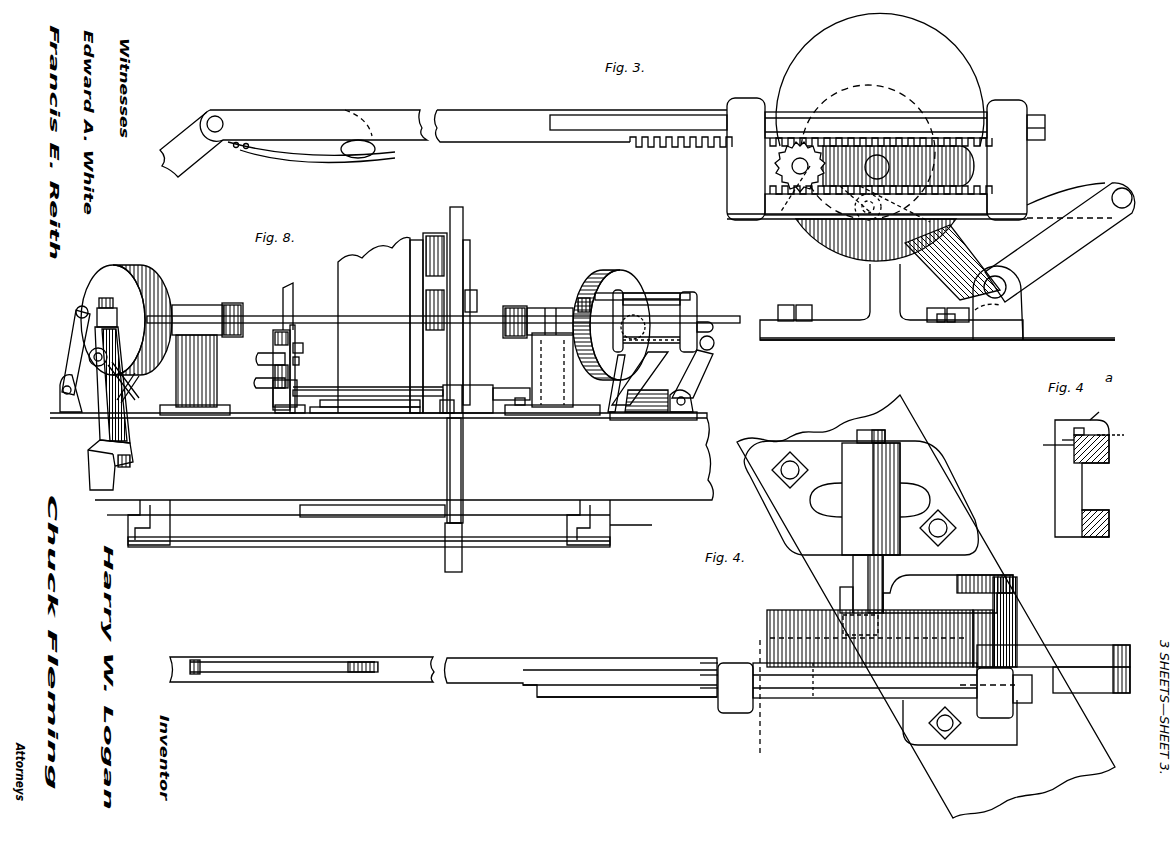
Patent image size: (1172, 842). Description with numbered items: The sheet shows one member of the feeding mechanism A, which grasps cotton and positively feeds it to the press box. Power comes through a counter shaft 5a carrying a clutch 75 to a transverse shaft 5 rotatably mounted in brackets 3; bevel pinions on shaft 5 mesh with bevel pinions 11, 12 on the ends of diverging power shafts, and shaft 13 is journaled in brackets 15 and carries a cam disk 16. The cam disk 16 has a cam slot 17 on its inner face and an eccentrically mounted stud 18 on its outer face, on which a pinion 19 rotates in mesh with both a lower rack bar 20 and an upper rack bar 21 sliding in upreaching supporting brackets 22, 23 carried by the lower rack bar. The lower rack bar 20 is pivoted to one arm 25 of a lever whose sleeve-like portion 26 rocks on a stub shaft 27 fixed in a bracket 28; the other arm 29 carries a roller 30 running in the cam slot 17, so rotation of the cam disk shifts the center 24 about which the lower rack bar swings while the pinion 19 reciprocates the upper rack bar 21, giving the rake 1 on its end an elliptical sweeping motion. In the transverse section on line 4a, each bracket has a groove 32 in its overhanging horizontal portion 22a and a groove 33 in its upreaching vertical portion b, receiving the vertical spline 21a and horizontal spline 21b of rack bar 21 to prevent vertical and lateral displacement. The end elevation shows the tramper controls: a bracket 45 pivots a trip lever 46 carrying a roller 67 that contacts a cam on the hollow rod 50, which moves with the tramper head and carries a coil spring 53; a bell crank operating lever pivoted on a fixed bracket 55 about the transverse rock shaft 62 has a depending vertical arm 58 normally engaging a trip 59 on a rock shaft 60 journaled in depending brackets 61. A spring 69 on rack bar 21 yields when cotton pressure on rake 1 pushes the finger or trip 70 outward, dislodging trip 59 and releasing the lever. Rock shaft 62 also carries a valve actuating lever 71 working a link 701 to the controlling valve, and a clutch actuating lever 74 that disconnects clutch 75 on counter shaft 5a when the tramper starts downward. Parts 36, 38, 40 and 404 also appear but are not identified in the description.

In FIG. 3, the rake 1 is at (162, 150).
In FIG. 4, the rake 1 is at (442, 668).
In FIG. 8, the brackets 3 is at (62, 427).
In FIG. 8, the transverse shaft 5 is at (320, 318).
In FIG. 8, the counter shaft 5a is at (712, 322).
In FIG. 8, the bevel pinion 11 is at (514, 306).
In FIG. 8, the bevel pinion 12 is at (236, 304).
In FIG. 3, the shaft 13 is at (866, 168).
In FIG. 4, the shaft 13 is at (855, 567).
In FIG. 3, the brackets 15 is at (872, 289).
In FIG. 8, the brackets 15 is at (210, 335).
In FIG. 4, the brackets 15 is at (858, 468).
In FIG. 3, the cam disk 16 is at (918, 90).
In FIG. 8, the cam disk 16 is at (125, 272).
In FIG. 4, the cam disk 16 is at (768, 628).
In FIG. 3, the cam slot 17 is at (842, 96).
In FIG. 4, the cam slot 17 is at (793, 620).
In FIG. 3, the stud 18 is at (800, 175).
In FIG. 3, the pinion 19 is at (785, 170).
In FIG. 8, the pinion 19 is at (89, 358).
In FIG. 4, the pinion 19 is at (808, 690).
In FIG. 3, the lower rack bar 20 is at (812, 212).
In FIG. 8, the lower rack bar 20 is at (100, 430).
In FIG. 4A, the lower rack bar 20 is at (1110, 522).
In FIG. 3, the upper rack bar 21 is at (778, 112).
In FIG. 8, the upper rack bar 21 is at (128, 396).
In FIG. 4, the upper rack bar 21 is at (505, 655).
In FIG. 4A, the upper rack bar 21 is at (1110, 455).
In FIG. 3, the spline 21a is at (592, 114).
In FIG. 4, the spline 21a is at (560, 672).
In FIG. 4A, the spline 21a is at (1124, 432).
In FIG. 3, the spline 21b is at (590, 128).
In FIG. 4, the spline 21b is at (562, 690).
In FIG. 4A, the spline 21b is at (1044, 436).
In FIG. 3, the supporting bracket 22 is at (730, 164).
In FIG. 8, the supporting bracket 22 is at (132, 450).
In FIG. 4, the supporting bracket 22 is at (742, 715).
In FIG. 4A, the supporting bracket 22 is at (1055, 485).
In FIG. 4A, the overhanging horizontal portion 22a is at (1111, 405).
In FIG. 3, the supporting bracket 23 is at (1018, 178).
In FIG. 8, the supporting bracket 23 is at (78, 340).
In FIG. 4, the supporting bracket 23 is at (1010, 717).
In FIG. 3, the center 24 is at (1122, 188).
In FIG. 8, the center 24 is at (80, 312).
In FIG. 4, the center 24 is at (1065, 690).
In FIG. 3, the arm 25 is at (1055, 268).
In FIG. 8, the arm 25 is at (66, 386).
In FIG. 4, the arm 25 is at (1065, 650).
In FIG. 3, the sleeve-like portion 26 is at (1022, 310).
In FIG. 8, the sleeve-like portion 26 is at (655, 387).
In FIG. 4, the sleeve-like portion 26 is at (1010, 628).
In FIG. 3, the stub shaft 27 is at (995, 276).
In FIG. 3, the bracket 28 is at (1030, 322).
In FIG. 8, the bracket 28 is at (60, 396).
In FIG. 4, the bracket 28 is at (1015, 585).
In FIG. 3, the arm 29 is at (945, 278).
In FIG. 8, the arm 29 is at (140, 382).
In FIG. 4, the arm 29 is at (948, 587).
In FIG. 3, the roller 30 is at (862, 220).
In FIG. 4A, the groove 32 is at (1077, 428).
In FIG. 4A, the groove 33 is at (1074, 440).
In FIG. 8, the panel 36 is at (338, 262).
In FIG. 8, the plate 38 is at (298, 306).
In FIG. 8, the handle 40 is at (283, 342).
In FIG. 8, the bracket 45 is at (428, 238).
In FIG. 8, the trip lever 46 is at (462, 260).
In FIG. 8, the hollow rod 50 is at (470, 274).
In FIG. 8, the coil spring 53 is at (446, 418).
In FIG. 8, the fixed bracket 55 is at (480, 388).
In FIG. 8, the depending vertical arm 58 is at (460, 465).
In FIG. 8, the trip 59 is at (462, 562).
In FIG. 8, the rock shaft 60 is at (368, 547).
In FIG. 8, the brackets 61 is at (172, 502).
In FIG. 8, the transverse shaft 62 is at (322, 390).
In FIG. 8, the roller 67 is at (478, 298).
In FIG. 3, the spring 69 is at (332, 158).
In FIG. 3, the finger or trip 70 is at (362, 147).
In FIG. 8, the valve actuating lever 71 is at (300, 364).
In FIG. 8, the clutch actuating lever 74 is at (503, 390).
In FIG. 8, the clutch 75 is at (548, 308).
In FIG. 8, the link 701 is at (313, 343).
In FIG. 8, the rod 404 is at (262, 382).
In FIG. 3, the feeding mechanism A is at (840, 187).
In FIG. 8, the feeding mechanism A is at (384, 343).
In FIG. 4, the feeding mechanism A is at (694, 645).
In FIG. 4A, the upreaching vertical portion b is at (1044, 467).
In FIG. 4, the section line 4a is at (754, 703).